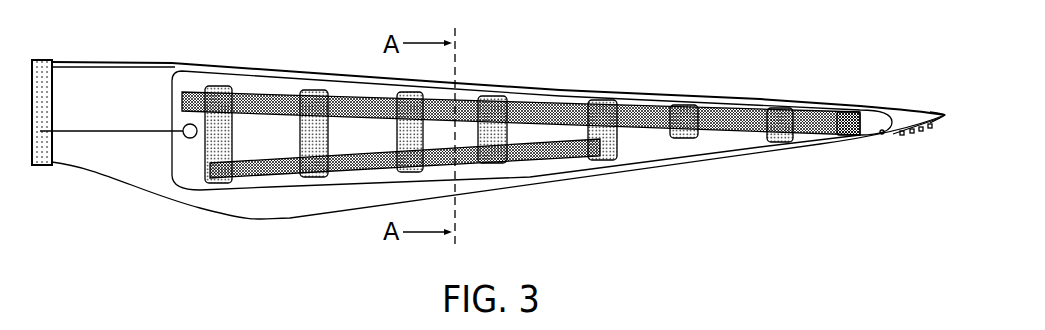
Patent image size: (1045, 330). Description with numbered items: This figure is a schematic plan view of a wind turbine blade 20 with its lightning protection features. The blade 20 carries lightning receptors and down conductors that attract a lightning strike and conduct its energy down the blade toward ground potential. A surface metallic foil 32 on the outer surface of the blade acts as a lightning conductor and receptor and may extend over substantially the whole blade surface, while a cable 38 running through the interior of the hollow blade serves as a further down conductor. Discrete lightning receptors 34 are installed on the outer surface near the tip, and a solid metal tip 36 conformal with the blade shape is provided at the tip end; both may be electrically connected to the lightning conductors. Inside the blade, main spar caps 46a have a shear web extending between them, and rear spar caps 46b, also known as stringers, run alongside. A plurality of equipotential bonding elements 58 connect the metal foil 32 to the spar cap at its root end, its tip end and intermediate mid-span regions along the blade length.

The blade 20 is at (681, 63).
The metallic foil 32 is at (165, 61).
The discrete lightning receptors 34 is at (930, 128).
The solid metal tip 36 is at (943, 113).
The cable 38 is at (137, 133).
The main spar caps 46a is at (266, 93).
The rear spar caps 46b is at (264, 176).
The equipotential bonding elements 58 is at (504, 95).